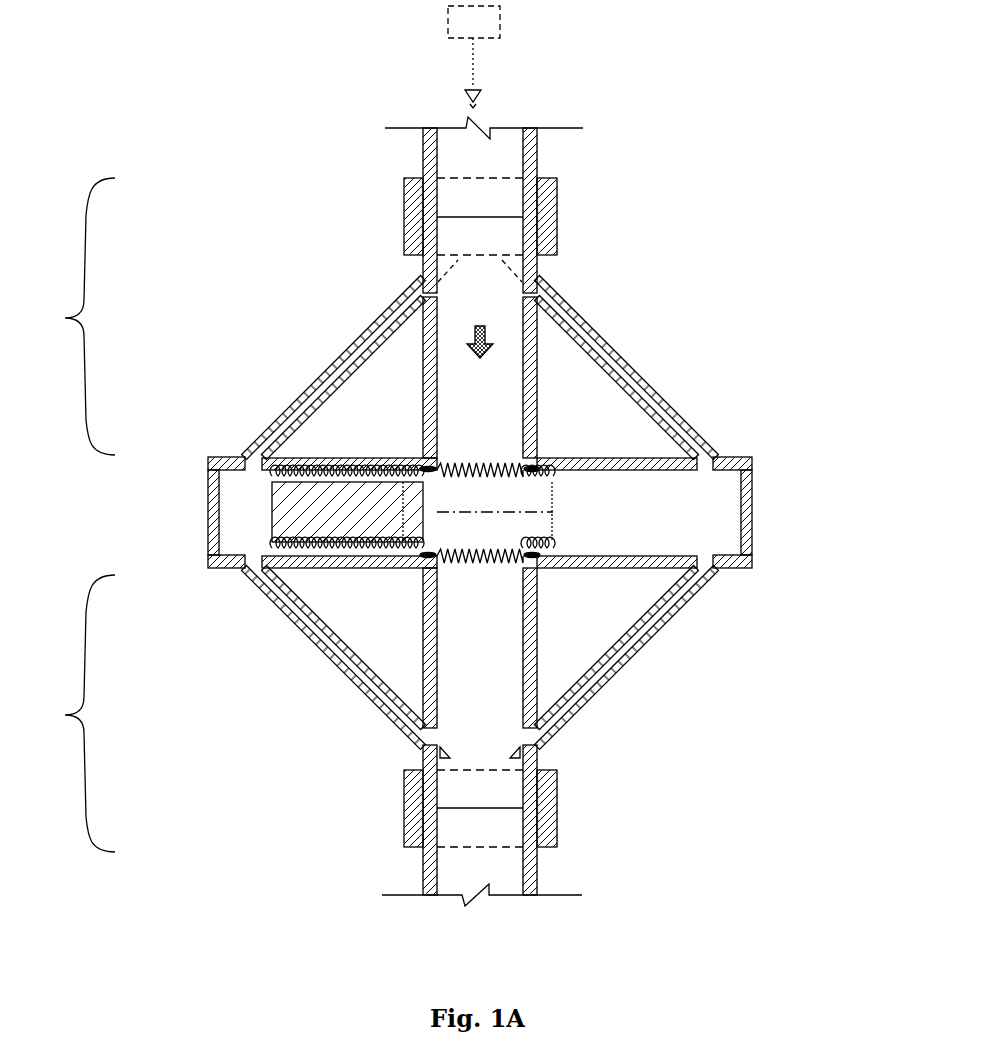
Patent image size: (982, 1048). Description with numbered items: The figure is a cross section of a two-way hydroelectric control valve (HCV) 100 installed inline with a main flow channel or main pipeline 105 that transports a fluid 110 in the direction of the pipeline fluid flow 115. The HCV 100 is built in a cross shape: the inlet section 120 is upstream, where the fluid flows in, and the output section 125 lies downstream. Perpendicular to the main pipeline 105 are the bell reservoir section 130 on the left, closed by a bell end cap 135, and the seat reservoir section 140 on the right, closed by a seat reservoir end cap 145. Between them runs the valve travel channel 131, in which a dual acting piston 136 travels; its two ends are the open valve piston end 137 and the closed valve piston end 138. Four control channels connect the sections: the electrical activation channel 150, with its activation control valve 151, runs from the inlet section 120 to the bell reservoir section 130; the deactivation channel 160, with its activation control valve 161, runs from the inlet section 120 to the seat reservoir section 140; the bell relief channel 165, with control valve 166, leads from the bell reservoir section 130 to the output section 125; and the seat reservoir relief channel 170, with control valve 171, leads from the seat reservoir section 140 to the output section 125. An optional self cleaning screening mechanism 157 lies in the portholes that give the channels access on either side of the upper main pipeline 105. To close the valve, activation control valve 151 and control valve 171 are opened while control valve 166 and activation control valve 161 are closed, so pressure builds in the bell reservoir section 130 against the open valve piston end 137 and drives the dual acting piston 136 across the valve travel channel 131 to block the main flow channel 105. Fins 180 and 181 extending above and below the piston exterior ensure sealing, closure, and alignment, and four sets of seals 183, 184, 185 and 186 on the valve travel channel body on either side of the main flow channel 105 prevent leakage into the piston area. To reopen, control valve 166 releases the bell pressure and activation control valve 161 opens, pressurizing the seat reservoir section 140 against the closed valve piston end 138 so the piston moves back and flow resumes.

The hydroelectric control valve 100 is at (558, 922).
The main flow channel 105 is at (510, 155).
The fluid 110 is at (474, 57).
The pipeline fluid flow 115 is at (486, 328).
The inlet section 120 is at (70, 316).
The output section 125 is at (70, 713).
The bell reservoir section 130 is at (227, 572).
The valve travel channel 131 is at (260, 498).
The bell end cap 135 is at (212, 498).
The dual acting piston 136 is at (335, 530).
The open valve piston end 137 is at (228, 531).
The closed valve piston end 138 is at (573, 513).
The seat reservoir section 140 is at (727, 563).
The seat reservoir end cap 145 is at (752, 492).
The electrical activation channel 150 is at (318, 380).
The activation control valve 151 is at (385, 330).
The self cleaning screening mechanism 157 is at (425, 293).
The deactivation channel 160 is at (660, 415).
The activation control valve 161 is at (603, 350).
The bell relief channel 165 is at (327, 643).
The control valve 166 is at (367, 679).
The seat reservoir relief channel 170 is at (622, 652).
The control valve 171 is at (600, 680).
The fin 180 is at (465, 465).
The fin 181 is at (463, 563).
The seal 183 is at (421, 460).
The seal 184 is at (547, 455).
The seal 185 is at (413, 570).
The seal 186 is at (545, 570).